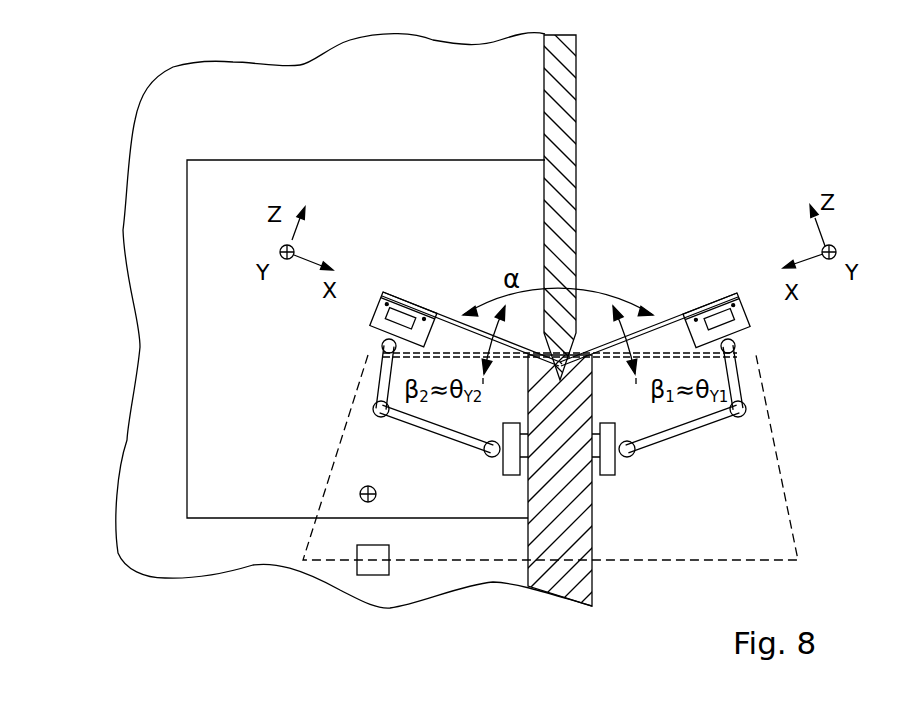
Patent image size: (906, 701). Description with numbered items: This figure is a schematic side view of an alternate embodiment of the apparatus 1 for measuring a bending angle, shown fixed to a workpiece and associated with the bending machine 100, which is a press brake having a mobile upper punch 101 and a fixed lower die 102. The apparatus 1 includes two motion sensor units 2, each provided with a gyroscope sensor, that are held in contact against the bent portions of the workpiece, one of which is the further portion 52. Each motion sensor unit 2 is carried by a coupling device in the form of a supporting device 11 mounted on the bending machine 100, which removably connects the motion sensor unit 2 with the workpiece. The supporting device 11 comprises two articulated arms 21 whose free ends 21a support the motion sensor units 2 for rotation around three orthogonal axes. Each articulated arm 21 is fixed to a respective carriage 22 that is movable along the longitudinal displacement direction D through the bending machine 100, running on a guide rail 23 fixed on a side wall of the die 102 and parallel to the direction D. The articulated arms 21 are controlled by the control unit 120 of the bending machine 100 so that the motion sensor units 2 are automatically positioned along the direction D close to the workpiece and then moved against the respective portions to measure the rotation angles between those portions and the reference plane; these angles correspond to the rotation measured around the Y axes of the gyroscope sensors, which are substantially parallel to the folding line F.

The bending machine 100 is at (104, 186).
The punch 101 is at (567, 205).
The die 102 is at (570, 467).
The apparatus 1 is at (148, 268).
The motion sensor unit 2 is at (378, 340).
The further portion 52 is at (460, 302).
The free end 21a is at (383, 350).
The articulated arm 21 is at (375, 412).
The supporting device 11 is at (368, 452).
The carriage 22 is at (513, 465).
The guide rail 23 is at (527, 457).
The control unit 120 is at (357, 568).
The longitudinal displacement direction D is at (360, 494).
The folding line F is at (560, 363).